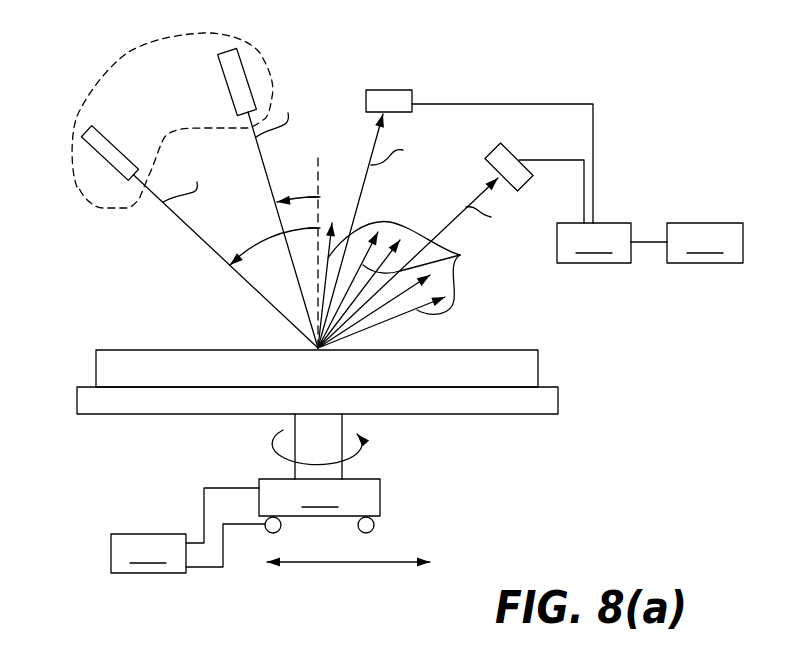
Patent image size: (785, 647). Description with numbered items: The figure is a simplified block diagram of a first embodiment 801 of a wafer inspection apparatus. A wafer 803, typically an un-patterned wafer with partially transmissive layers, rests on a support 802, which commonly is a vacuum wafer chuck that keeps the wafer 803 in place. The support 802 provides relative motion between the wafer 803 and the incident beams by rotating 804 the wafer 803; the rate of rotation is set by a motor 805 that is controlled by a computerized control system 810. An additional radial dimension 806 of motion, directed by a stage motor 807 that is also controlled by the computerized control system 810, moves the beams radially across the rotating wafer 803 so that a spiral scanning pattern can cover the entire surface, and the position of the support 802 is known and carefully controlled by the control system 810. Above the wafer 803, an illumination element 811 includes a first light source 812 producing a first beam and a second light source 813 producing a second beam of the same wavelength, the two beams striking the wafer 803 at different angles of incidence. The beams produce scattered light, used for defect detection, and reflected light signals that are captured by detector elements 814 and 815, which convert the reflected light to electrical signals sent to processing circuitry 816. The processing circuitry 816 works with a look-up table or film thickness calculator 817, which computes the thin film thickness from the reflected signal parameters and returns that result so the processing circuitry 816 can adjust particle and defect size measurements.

The first embodiment 801 is at (604, 60).
The support 802 is at (560, 397).
The wafer 803 is at (540, 368).
The rotating 804 is at (283, 430).
The motor 805 is at (319, 465).
The radial dimension of motion 806 is at (356, 563).
The stage motor 807 is at (268, 534).
The computerized control system 810 is at (188, 530).
The illumination element 811 is at (138, 57).
The first light source 812 is at (97, 157).
The second light source 813 is at (260, 55).
The detector element 814 is at (392, 90).
The detector element 815 is at (507, 147).
The processing circuitry 816 is at (612, 243).
The film thickness calculator 817 is at (705, 243).